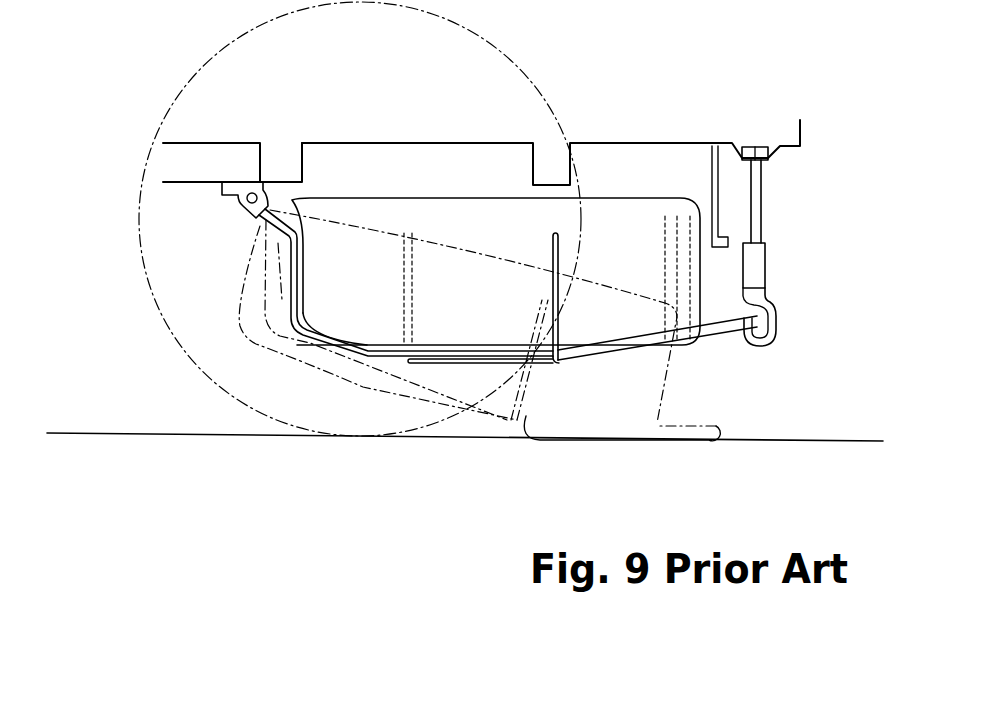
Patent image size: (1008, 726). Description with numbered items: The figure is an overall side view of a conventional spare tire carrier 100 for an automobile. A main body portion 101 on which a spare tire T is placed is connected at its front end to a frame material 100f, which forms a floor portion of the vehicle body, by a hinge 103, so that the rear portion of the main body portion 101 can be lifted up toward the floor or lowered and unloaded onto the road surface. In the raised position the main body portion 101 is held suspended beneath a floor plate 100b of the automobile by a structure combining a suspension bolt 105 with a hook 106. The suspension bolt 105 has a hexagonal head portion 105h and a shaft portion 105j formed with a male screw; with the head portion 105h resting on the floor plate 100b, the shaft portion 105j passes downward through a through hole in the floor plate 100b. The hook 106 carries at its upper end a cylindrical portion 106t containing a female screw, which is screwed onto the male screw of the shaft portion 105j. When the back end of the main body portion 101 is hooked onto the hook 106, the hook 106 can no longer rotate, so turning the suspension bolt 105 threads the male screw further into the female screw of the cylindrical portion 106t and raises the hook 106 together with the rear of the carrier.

The spare tire carrier 100 is at (286, 371).
The frame material 100f is at (205, 163).
The floor plate 100b is at (663, 146).
The spare tire T is at (457, 273).
The main body portion 101 is at (605, 360).
The hinge 103 is at (234, 216).
The suspension bolt 105 is at (816, 148).
The head portion 105h is at (763, 147).
The shaft portion 105j is at (764, 205).
The hook 106 is at (816, 292).
The cylindrical portion 106t is at (757, 262).